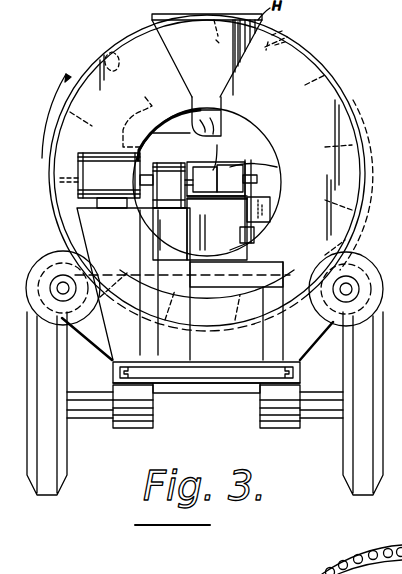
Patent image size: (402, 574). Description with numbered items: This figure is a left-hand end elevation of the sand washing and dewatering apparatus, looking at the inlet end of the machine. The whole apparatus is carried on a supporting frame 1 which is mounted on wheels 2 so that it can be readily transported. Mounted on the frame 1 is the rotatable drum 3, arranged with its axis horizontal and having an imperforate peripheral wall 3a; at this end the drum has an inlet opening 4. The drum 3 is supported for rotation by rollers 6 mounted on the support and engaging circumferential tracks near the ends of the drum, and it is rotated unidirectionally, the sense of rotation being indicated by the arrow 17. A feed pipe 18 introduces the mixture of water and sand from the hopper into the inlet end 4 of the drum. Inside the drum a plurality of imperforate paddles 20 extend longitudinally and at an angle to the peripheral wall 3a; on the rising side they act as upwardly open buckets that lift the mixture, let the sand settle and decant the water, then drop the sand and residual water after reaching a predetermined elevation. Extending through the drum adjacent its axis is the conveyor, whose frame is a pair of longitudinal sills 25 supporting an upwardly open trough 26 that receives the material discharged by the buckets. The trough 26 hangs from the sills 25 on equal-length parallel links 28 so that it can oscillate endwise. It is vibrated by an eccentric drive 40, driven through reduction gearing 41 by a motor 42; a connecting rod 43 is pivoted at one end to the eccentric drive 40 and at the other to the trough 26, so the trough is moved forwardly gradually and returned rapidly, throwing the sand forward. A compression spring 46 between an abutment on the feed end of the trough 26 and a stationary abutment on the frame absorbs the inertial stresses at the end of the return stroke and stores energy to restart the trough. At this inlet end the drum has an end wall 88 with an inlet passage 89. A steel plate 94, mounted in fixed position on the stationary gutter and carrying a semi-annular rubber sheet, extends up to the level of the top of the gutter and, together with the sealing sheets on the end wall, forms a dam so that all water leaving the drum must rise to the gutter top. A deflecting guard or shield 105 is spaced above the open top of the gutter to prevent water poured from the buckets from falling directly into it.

The supporting frame 1 is at (128, 432).
The wheels 2 is at (44, 498).
The rotatable drum 3 is at (333, 70).
The imperforate peripheral wall 3a is at (360, 158).
The inlet opening 4 is at (266, 141).
The rollers 6 is at (44, 264).
The arrow 17 is at (50, 118).
The feed pipe 18 is at (137, 115).
The imperforate paddles 20 is at (113, 47).
The longitudinal sills 25 is at (250, 241).
The trough 26 is at (215, 150).
The links 28 is at (262, 192).
The eccentric drive 40 is at (195, 166).
The reduction gearing 41 is at (171, 185).
The motor 42 is at (106, 180).
The connecting rod 43 is at (252, 170).
The compression spring 46 is at (213, 212).
The end wall 88 is at (212, 75).
The inlet passage 89 is at (226, 118).
The steel plate 94 is at (266, 210).
The deflecting guard or shield 105 is at (258, 183).